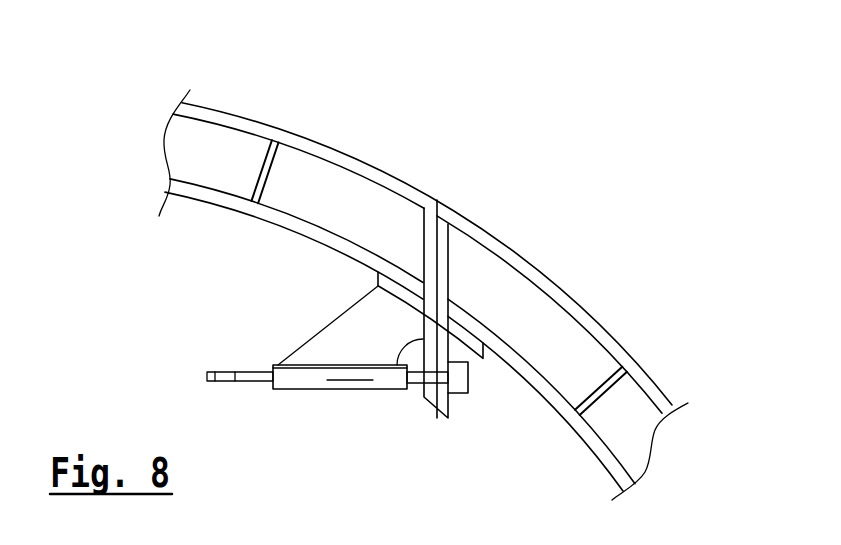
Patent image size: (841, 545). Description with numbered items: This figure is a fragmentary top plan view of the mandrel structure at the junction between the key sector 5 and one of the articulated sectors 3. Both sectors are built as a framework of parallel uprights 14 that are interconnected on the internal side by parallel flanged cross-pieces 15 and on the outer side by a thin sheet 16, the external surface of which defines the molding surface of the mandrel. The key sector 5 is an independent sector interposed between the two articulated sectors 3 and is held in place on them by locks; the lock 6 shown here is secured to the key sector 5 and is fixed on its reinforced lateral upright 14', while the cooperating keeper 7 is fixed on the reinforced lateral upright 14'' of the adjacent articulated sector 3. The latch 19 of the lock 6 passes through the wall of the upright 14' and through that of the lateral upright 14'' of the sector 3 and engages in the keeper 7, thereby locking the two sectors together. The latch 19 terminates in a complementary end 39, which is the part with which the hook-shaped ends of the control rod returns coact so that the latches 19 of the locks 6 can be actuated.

The articulated sector 3 is at (562, 245).
The key sector 5 is at (447, 269).
The lock 6 is at (346, 400).
The keeper 7 is at (466, 377).
The upright 14 is at (491, 226).
The reinforced lateral upright 14' is at (374, 317).
The reinforced lateral upright 14'' is at (474, 298).
The flanged cross-piece 15 is at (227, 200).
The thin sheet 16 is at (378, 166).
The latch 19 is at (245, 381).
The complementary end 39 is at (223, 372).